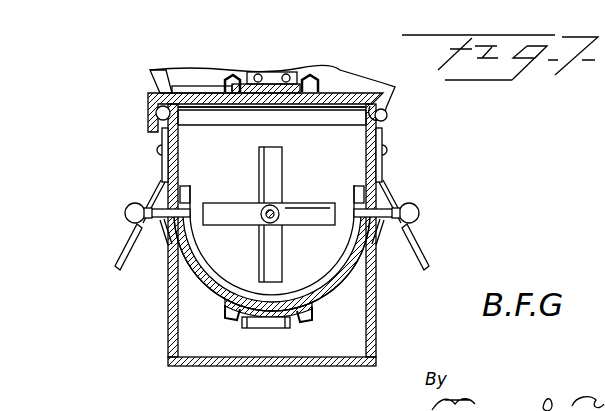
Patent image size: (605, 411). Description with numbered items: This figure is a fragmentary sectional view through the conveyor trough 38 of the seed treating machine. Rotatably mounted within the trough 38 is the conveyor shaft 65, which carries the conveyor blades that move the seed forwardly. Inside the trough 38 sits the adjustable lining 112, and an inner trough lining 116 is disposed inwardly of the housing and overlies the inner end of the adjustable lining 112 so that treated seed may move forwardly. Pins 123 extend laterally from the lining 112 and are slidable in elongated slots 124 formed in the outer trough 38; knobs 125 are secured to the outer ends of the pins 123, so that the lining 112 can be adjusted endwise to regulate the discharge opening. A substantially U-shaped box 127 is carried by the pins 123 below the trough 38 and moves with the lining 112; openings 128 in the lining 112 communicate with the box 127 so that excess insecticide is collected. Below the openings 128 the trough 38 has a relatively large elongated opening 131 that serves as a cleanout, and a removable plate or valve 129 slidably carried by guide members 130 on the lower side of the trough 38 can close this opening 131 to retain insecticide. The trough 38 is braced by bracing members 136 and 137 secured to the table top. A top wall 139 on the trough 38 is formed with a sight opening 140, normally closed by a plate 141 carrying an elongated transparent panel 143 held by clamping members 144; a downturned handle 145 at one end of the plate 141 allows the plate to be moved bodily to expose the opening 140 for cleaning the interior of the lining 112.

The conveyor trough 38 is at (338, 290).
The conveyor shaft 65 is at (280, 207).
The adjustable lining 112 is at (197, 282).
The inner trough lining 116 is at (342, 243).
The pins 123 is at (378, 243).
The elongated slots 124 is at (160, 255).
The knobs 125 is at (413, 213).
The U-shaped box 127 is at (380, 332).
The openings 128 is at (263, 287).
The removable plate 129 is at (280, 328).
The guide members 130 is at (233, 313).
The elongated opening 131 is at (248, 330).
The bracing member 136 is at (427, 248).
The bracing member 137 is at (130, 237).
The top wall 139 is at (358, 100).
The opening 140 is at (257, 108).
The plate 141 is at (163, 93).
The transparent panel 143 is at (270, 74).
The clamping members 144 is at (303, 77).
The downturned handle 145 is at (147, 117).